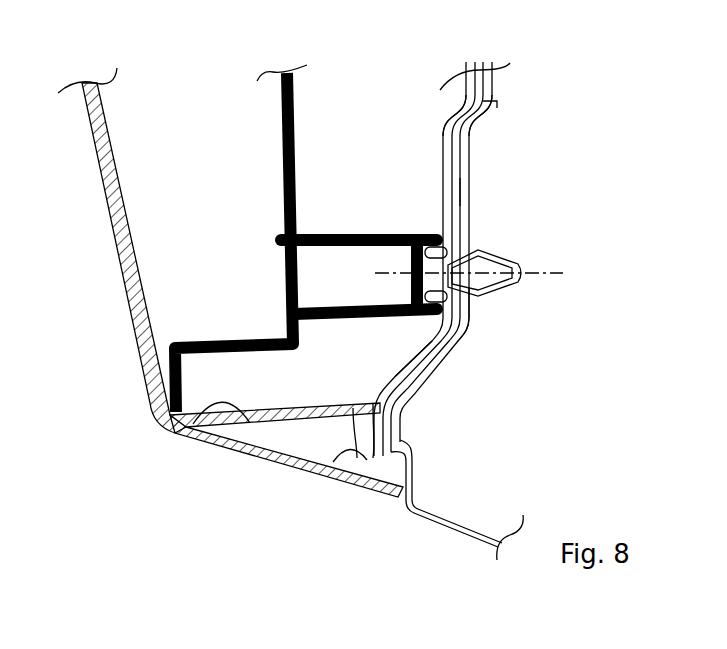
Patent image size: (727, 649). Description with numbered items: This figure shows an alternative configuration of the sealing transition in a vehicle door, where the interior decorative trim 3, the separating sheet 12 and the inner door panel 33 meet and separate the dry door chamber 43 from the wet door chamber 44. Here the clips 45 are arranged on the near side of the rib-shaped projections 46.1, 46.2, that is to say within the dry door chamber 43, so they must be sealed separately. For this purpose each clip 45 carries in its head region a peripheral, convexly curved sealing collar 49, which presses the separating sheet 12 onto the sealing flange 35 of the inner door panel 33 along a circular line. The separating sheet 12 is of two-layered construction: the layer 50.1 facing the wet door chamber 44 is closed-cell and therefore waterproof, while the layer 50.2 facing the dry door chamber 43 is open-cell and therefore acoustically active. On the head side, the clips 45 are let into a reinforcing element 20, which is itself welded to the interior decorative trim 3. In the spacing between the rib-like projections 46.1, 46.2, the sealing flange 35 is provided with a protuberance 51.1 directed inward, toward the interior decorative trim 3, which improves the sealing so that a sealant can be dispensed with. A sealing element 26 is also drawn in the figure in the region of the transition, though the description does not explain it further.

The interior decorative trim 3 is at (114, 237).
The separating sheet 12 is at (490, 82).
The reinforcing element 20 is at (281, 118).
The sealing strip 26 is at (475, 299).
The inner door panel 33 is at (420, 390).
The sealing flange 35 is at (464, 193).
The dry door chamber 43 is at (392, 199).
The wet door chamber 44 is at (572, 212).
The clip 45 is at (510, 268).
The rib-shaped projection 46.1 is at (322, 468).
The rib-shaped projection 46.2 is at (190, 430).
The sealing collar 49 is at (477, 300).
The layer 50.1 is at (478, 122).
The layer 50.2 is at (461, 108).
The protuberance 51.1 is at (397, 432).